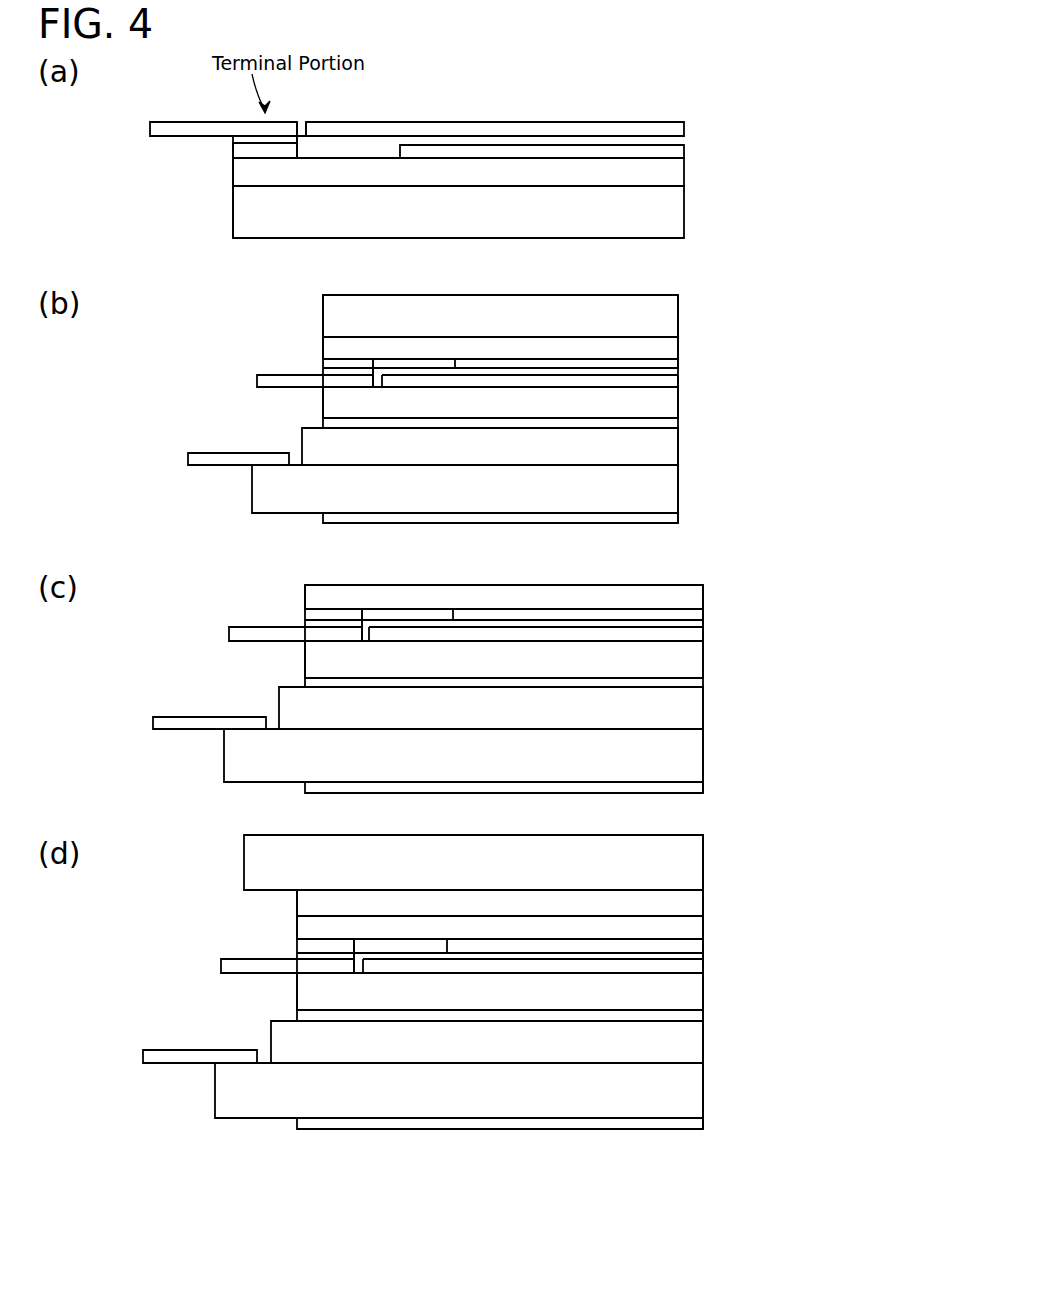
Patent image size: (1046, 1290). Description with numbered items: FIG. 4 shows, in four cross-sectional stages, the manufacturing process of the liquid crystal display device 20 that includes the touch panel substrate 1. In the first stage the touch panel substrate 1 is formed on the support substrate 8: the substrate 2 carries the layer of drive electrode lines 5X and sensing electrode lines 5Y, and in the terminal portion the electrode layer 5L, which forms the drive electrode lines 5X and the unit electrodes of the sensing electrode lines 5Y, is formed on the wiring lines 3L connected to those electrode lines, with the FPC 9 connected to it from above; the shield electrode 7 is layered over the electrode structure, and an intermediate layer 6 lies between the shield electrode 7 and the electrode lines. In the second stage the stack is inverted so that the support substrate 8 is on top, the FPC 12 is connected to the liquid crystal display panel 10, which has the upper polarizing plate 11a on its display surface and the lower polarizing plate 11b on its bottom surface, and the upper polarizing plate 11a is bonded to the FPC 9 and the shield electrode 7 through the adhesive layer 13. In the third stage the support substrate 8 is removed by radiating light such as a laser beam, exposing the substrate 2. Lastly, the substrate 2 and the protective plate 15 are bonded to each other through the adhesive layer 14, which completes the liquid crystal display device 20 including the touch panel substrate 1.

The touch panel substrate 1 is at (806, 595).
The substrate 2 is at (676, 174).
The wiring lines 3L is at (235, 153).
The electrode layer 5L is at (235, 140).
The drive electrode lines 5X is at (604, 549).
The sensing electrode lines 5Y is at (676, 152).
The upper electrode 6 is at (676, 140).
The shield electrode 7 is at (676, 130).
The support substrate 8 is at (676, 222).
The FPC 9 is at (160, 128).
The liquid crystal display panel 10 is at (686, 428).
The upper polarizing plate 11a is at (670, 424).
The lower polarizing plate 11b is at (670, 518).
The FPC 12 is at (200, 458).
The adhesive layer 13 is at (670, 411).
The adhesive layer 14 is at (697, 900).
The protective plate 15 is at (697, 862).
The liquid crystal display device 20 is at (785, 848).